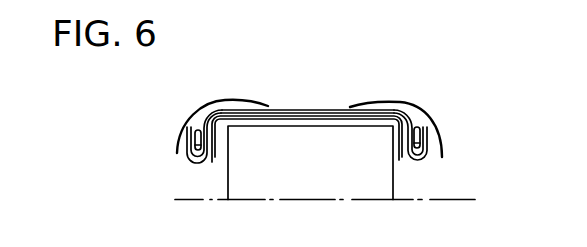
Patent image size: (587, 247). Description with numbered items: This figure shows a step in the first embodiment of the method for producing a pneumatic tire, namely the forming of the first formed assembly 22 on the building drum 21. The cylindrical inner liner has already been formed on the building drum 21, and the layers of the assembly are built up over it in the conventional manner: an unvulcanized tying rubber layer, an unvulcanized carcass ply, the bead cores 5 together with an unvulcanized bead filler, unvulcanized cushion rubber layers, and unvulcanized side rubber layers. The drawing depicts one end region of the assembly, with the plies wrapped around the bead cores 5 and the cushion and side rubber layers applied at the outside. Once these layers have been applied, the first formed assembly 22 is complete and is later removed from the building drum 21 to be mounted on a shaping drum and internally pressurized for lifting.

The building drum 21 is at (394, 182).
The first formed assembly 22 is at (250, 80).
The bead core 5 is at (186, 164).